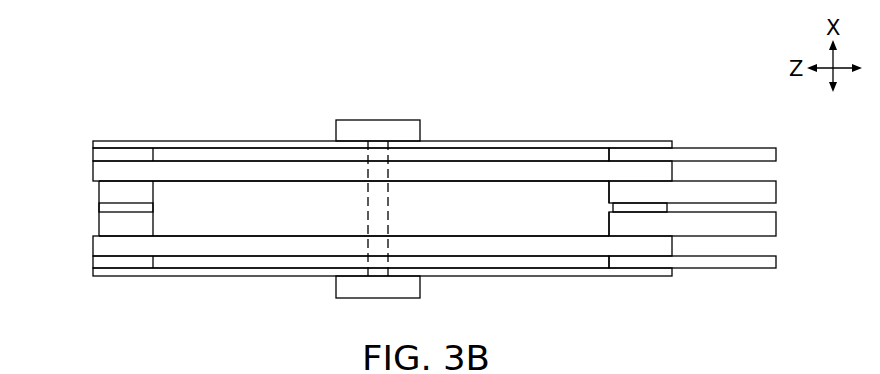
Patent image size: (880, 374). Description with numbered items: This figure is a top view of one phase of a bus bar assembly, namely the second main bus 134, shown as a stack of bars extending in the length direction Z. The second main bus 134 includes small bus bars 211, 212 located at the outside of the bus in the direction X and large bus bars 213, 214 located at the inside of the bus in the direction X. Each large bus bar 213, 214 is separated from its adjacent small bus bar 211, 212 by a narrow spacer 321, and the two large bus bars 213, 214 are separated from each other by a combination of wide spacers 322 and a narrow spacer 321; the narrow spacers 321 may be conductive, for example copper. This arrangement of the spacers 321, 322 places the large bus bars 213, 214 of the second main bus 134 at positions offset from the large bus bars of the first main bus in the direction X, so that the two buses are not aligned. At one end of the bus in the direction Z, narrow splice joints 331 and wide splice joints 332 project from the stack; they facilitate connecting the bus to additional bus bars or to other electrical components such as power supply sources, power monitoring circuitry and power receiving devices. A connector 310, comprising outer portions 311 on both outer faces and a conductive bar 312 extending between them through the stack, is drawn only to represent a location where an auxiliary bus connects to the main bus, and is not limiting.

The second main bus 134 is at (668, 92).
The small bus bar 211 is at (591, 270).
The small bus bar 212 is at (200, 146).
The large bus bar 213 is at (543, 247).
The large bus bar 214 is at (275, 170).
The connector 310 is at (355, 100).
The outer portion 311 is at (380, 118).
The conductive bar 312 is at (380, 172).
The narrow spacer 321 is at (107, 155).
The wide spacer 322 is at (108, 187).
The narrow splice joint 331 is at (771, 153).
The wide splice joint 332 is at (771, 192).